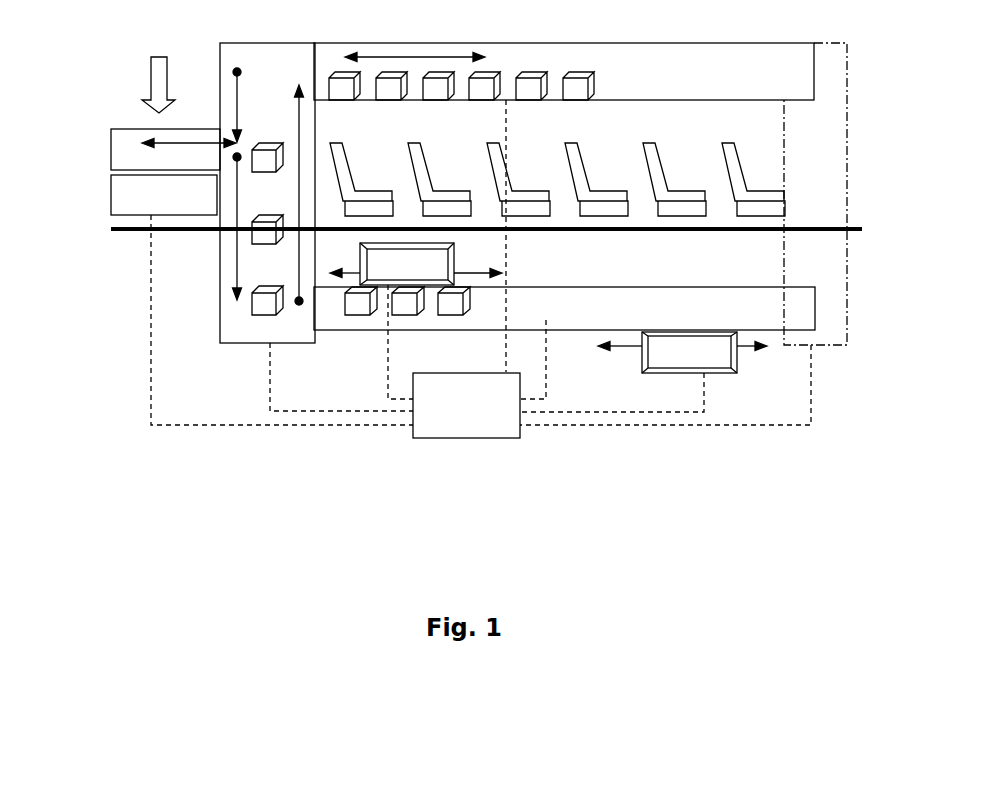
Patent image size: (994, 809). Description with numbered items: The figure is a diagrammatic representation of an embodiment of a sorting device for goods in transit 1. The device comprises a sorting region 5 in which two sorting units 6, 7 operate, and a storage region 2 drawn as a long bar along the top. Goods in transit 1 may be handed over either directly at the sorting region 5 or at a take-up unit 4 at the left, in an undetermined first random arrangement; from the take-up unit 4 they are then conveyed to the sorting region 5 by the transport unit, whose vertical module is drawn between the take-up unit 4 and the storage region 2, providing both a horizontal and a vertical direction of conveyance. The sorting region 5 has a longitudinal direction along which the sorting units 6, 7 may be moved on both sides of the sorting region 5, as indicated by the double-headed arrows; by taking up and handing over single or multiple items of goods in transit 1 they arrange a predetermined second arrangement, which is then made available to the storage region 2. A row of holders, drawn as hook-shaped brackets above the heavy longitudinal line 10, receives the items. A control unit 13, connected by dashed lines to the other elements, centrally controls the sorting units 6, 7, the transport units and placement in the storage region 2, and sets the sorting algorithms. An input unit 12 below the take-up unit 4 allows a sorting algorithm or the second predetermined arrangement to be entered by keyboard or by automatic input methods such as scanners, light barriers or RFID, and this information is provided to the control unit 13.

The goods in transit 1 is at (268, 306).
The storage region 2 is at (540, 52).
The take-up unit 4 is at (118, 148).
The sorting region 5 is at (601, 315).
The sorting unit 6 is at (373, 271).
The sorting unit 7 is at (672, 359).
The guide rail 10 is at (803, 227).
The input unit 12 is at (118, 210).
The control unit 13 is at (759, 176).